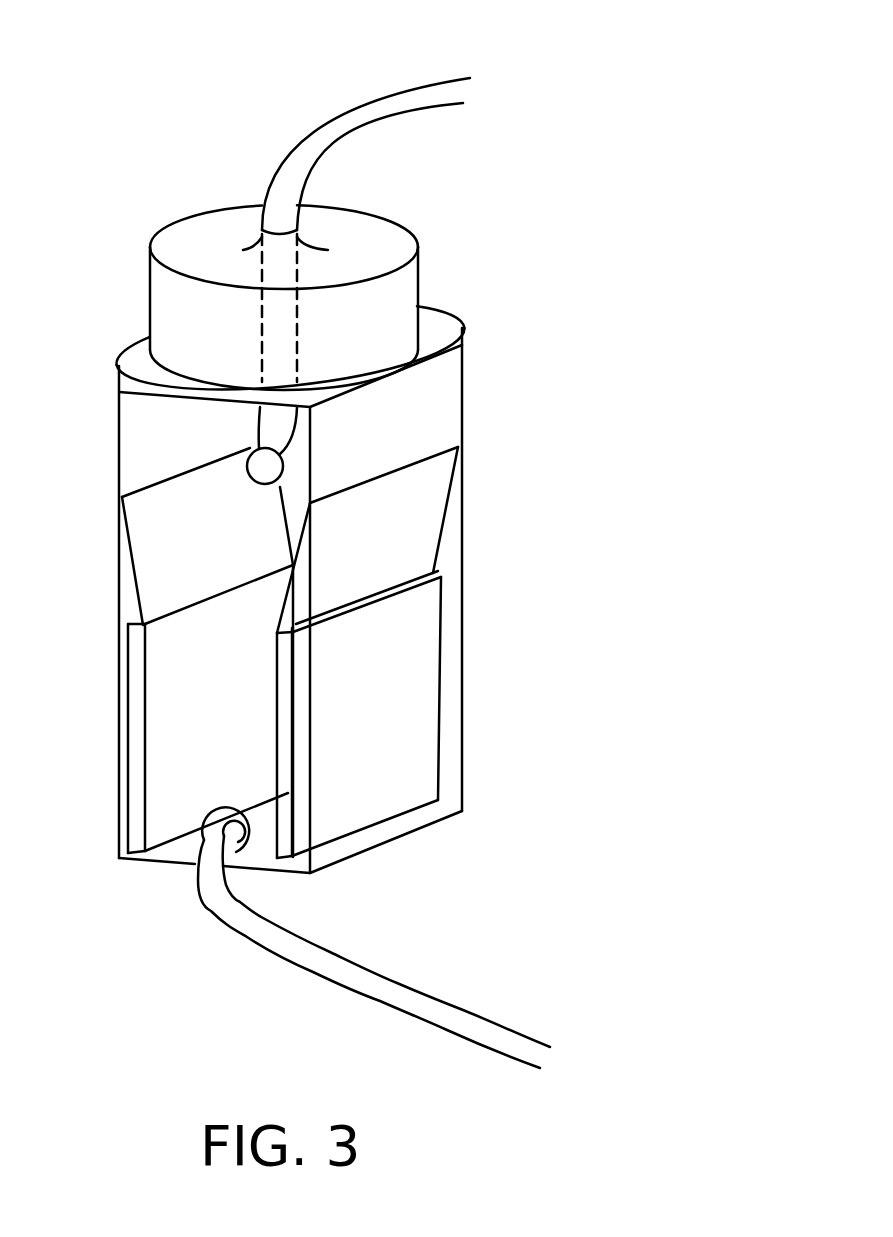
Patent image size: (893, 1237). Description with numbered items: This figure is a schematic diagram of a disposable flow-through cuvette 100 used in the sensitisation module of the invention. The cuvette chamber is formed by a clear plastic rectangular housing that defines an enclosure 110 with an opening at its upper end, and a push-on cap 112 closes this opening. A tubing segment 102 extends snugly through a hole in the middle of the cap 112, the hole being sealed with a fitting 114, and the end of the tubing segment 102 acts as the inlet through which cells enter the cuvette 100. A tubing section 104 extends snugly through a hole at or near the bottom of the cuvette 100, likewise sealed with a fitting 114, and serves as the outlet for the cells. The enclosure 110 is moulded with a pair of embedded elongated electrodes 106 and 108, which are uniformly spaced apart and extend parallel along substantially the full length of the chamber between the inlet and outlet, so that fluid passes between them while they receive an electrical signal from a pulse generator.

The flow-through cuvette 100 is at (618, 430).
The tubing segment 102 is at (418, 93).
The tubing section 104 is at (467, 1013).
The electrode 106 is at (432, 695).
The electrode 108 is at (148, 727).
The enclosure 110 is at (450, 407).
The push-on cap 112 is at (410, 302).
The fitting 114 is at (313, 240).